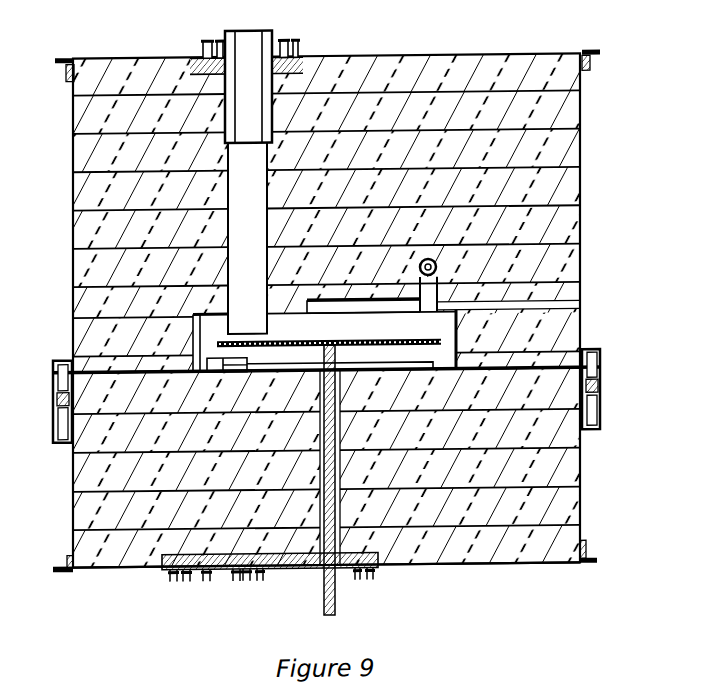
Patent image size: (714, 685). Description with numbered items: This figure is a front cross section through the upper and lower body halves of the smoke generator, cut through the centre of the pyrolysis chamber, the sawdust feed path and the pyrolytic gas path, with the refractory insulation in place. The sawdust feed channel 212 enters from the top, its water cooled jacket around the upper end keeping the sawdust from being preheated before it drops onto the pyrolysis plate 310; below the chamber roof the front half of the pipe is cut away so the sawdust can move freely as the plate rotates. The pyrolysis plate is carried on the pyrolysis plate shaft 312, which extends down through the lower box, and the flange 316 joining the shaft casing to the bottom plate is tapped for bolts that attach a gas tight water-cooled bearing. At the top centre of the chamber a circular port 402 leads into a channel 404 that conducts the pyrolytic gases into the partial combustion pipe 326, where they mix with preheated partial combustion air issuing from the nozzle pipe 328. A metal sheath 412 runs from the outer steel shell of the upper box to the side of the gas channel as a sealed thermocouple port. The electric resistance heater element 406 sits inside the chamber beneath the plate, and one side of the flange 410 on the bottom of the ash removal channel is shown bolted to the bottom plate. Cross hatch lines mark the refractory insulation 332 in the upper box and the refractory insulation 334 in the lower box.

The sawdust feed channel 212 is at (257, 171).
The pyrolysis plate 310 is at (445, 339).
The pyrolysis plate shaft 312 is at (335, 583).
The flange 316 is at (288, 572).
The partial combustion pipe 326 is at (440, 278).
The nozzle pipe 328 is at (437, 263).
The refractory insulation 332 is at (513, 159).
The refractory insulation 334 is at (497, 475).
The circular port 402 is at (328, 307).
The channel 404 is at (377, 304).
The electric resistance heater element 406 is at (453, 378).
The flange 410 is at (163, 563).
The metal sheath 412 is at (537, 292).